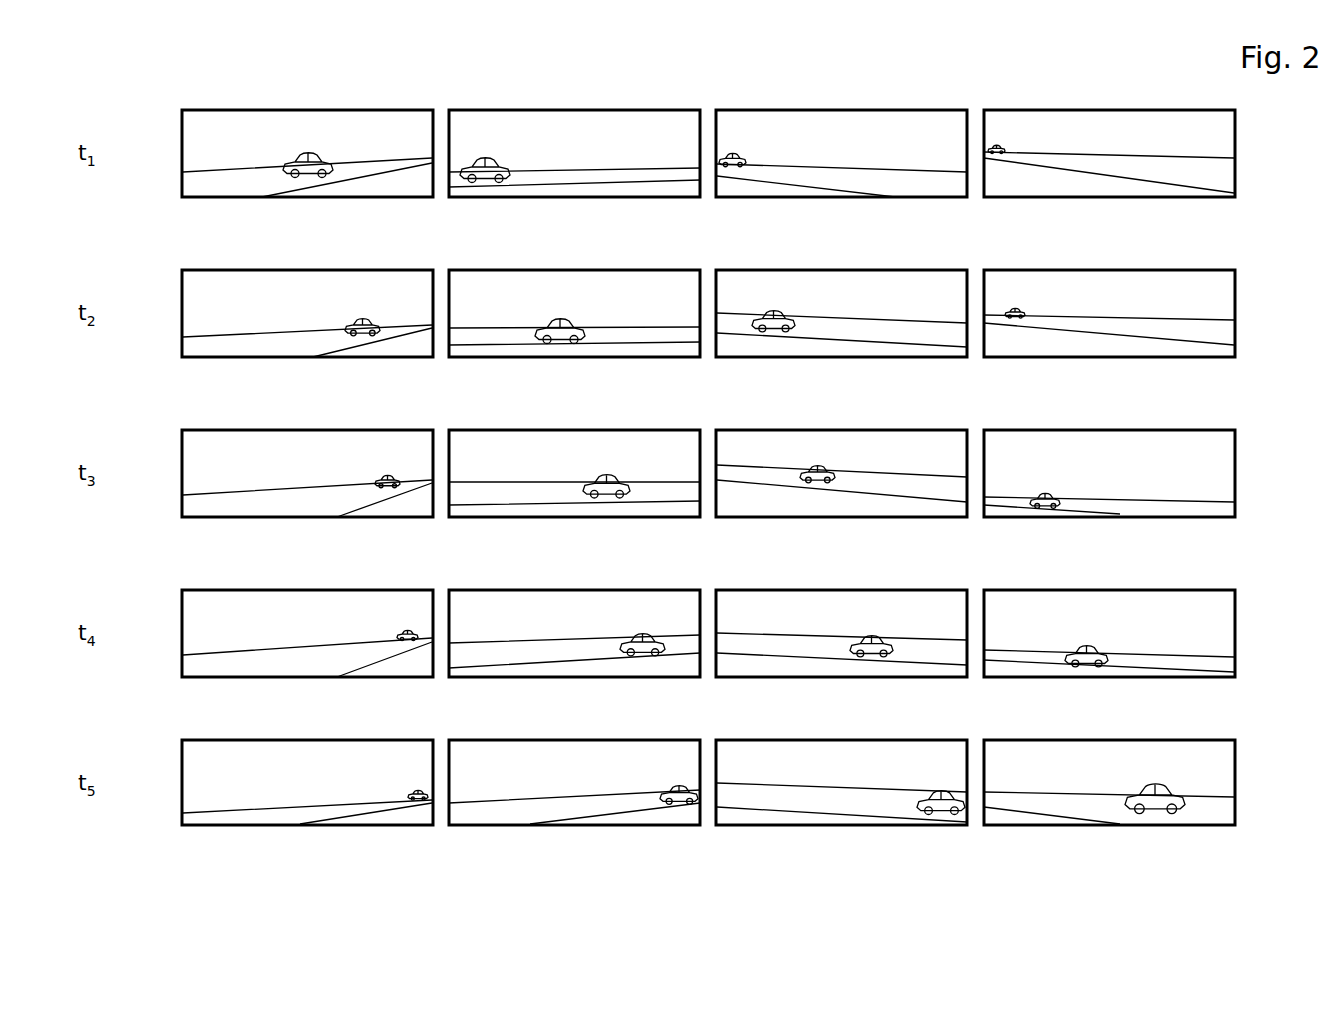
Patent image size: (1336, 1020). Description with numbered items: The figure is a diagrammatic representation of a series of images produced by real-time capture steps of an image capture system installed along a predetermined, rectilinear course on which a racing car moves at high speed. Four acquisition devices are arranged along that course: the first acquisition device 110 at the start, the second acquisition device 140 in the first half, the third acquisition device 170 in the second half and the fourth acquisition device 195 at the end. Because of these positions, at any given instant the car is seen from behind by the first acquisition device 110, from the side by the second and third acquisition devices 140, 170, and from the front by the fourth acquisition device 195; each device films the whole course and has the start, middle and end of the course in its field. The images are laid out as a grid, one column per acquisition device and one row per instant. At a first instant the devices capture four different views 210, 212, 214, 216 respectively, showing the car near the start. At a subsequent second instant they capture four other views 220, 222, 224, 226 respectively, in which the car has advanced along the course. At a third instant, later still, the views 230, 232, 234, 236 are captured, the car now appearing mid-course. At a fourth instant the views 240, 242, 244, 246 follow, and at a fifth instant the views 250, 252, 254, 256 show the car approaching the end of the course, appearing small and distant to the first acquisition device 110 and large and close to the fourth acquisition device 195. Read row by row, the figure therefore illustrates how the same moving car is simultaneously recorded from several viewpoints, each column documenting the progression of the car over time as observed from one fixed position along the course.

The acquisition device C1 110 is at (328, 66).
The acquisition device C2 140 is at (593, 66).
The acquisition device C3 170 is at (863, 66).
The acquisition device C4 195 is at (1128, 66).
The view captured by C1 at instant t1 210 is at (182, 128).
The view captured by C2 at instant t1 212 is at (487, 110).
The view captured by C3 at instant t1 214 is at (742, 110).
The view captured by C4 at instant t1 216 is at (1002, 110).
The view captured by C1 at instant t2 220 is at (261, 270).
The view captured by C2 at instant t2 222 is at (478, 286).
The view captured by C3 at instant t2 224 is at (746, 270).
The view captured by C4 at instant t2 226 is at (1006, 270).
The view captured by C1 at instant t3 230 is at (223, 428).
The view captured by C2 at instant t3 232 is at (491, 428).
The view captured by C3 at instant t3 234 is at (746, 428).
The view captured by C4 at instant t3 236 is at (1006, 428).
The view captured by C1 at instant t4 240 is at (223, 588).
The view captured by C2 at instant t4 242 is at (491, 588).
The view captured by C3 at instant t4 244 is at (746, 588).
The view captured by C4 at instant t4 246 is at (1006, 588).
The view captured by C1 at instant t5 250 is at (223, 738).
The view captured by C2 at instant t5 252 is at (491, 738).
The view captured by C3 at instant t5 254 is at (746, 738).
The view captured by C4 at instant t5 256 is at (1006, 738).